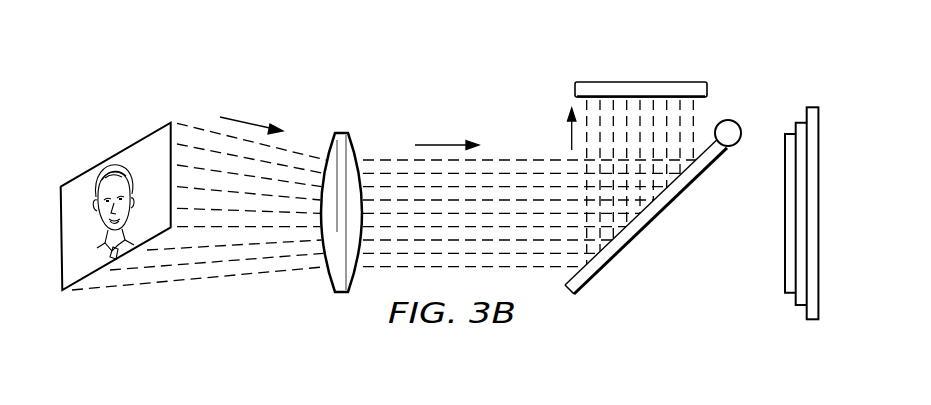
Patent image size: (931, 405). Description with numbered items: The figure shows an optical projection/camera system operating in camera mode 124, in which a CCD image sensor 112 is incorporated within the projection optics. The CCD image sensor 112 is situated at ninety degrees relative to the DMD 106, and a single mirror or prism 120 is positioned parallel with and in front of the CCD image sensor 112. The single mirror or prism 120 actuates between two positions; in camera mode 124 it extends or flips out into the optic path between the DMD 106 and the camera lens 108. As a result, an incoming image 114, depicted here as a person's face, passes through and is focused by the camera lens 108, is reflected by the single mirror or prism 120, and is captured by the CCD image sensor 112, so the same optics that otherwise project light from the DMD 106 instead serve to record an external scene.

The DMD 106 is at (812, 107).
The projection lens / camera lens 108 is at (342, 133).
The CCD image sensor 112 is at (647, 81).
The incoming image 114 is at (115, 155).
The single mirror or prism 120 is at (588, 282).
The camera mode 124 is at (440, 78).